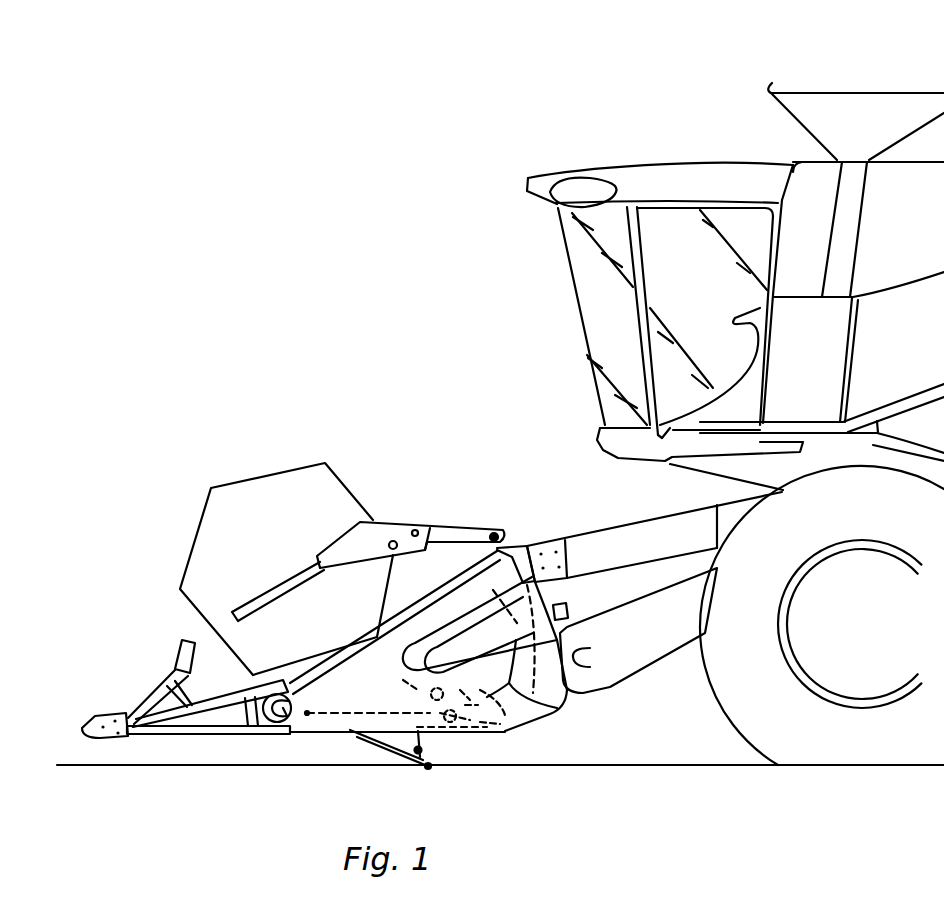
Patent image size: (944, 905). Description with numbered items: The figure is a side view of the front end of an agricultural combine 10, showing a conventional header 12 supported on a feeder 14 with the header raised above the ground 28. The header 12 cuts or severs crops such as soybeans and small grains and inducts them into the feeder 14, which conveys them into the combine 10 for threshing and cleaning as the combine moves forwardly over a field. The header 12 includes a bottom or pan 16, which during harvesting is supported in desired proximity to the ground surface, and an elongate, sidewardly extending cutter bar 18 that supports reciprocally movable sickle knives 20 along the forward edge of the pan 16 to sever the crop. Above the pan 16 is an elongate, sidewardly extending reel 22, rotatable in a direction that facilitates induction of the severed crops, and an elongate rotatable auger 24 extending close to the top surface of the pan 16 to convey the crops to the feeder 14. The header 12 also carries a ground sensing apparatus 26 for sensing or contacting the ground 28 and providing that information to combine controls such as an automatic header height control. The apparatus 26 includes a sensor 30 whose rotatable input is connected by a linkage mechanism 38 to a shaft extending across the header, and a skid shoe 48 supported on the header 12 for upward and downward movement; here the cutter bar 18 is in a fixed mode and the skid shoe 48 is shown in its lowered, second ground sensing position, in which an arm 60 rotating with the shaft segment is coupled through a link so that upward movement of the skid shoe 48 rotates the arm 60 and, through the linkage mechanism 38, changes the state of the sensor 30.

The agricultural combine 10 is at (522, 115).
The header 12 is at (377, 697).
The feeder 14 is at (600, 520).
The pan 16 is at (393, 713).
The cutter bar 18 is at (293, 781).
The sickle knives 20 is at (306, 733).
The reel 22 is at (193, 537).
The auger 24 is at (553, 707).
The ground sensing apparatus 26 is at (430, 769).
The ground 28 is at (67, 764).
The sensor 30 is at (400, 678).
The linkage mechanism 38 is at (508, 733).
The skid shoe 48 is at (392, 750).
The arm 60 is at (422, 741).